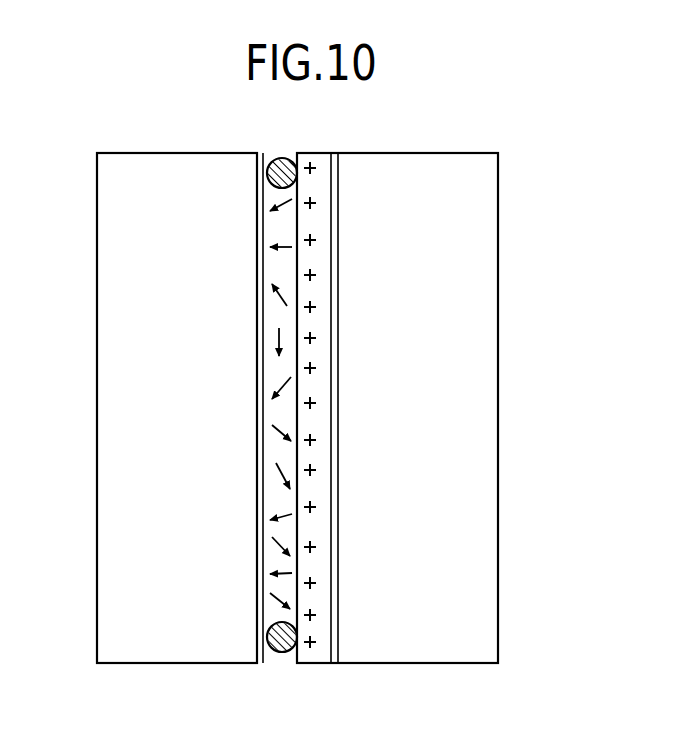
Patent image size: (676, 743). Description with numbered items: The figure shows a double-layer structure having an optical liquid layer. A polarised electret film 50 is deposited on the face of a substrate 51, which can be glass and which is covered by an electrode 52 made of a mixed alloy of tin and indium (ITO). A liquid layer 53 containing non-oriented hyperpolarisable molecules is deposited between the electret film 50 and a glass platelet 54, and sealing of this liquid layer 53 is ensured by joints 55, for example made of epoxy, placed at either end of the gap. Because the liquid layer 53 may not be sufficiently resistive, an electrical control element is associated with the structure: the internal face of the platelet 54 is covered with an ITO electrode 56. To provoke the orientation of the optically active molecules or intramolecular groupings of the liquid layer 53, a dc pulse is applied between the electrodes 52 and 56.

The polarised electret film 50 is at (313, 258).
The substrate 51 is at (486, 374).
The electrode 52 is at (333, 521).
The liquid layer 53 is at (279, 313).
The glass platelet 54 is at (107, 373).
The joints 55 is at (281, 157).
The ITO electrode 56 is at (262, 485).